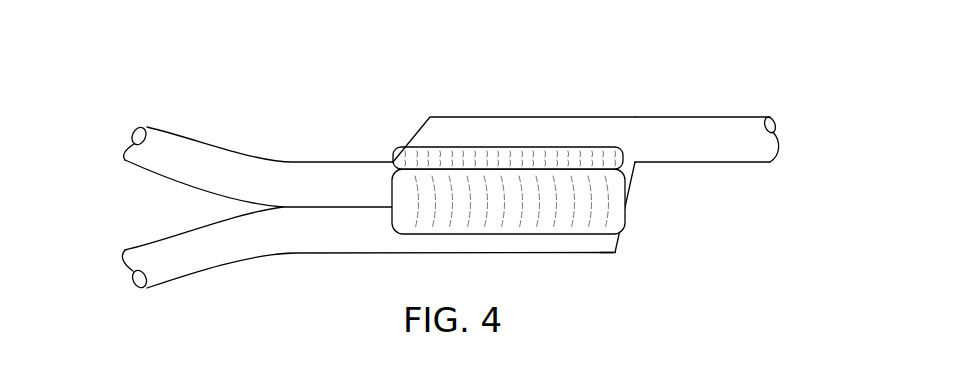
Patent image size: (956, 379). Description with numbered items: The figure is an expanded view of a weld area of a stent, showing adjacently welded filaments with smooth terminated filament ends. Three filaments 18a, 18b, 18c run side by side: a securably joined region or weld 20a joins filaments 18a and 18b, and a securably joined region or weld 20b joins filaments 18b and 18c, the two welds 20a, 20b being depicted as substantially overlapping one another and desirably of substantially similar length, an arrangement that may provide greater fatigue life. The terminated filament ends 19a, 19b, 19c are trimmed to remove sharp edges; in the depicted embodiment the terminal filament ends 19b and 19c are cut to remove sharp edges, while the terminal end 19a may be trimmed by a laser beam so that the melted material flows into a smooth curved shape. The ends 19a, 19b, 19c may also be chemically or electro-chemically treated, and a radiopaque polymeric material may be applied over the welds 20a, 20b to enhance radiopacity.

The filament 18a is at (757, 160).
The filament 18b is at (226, 166).
The filament 18c is at (224, 250).
The terminated filament end 19a is at (408, 148).
The terminated filament end 19b is at (632, 187).
The terminated filament end 19c is at (617, 244).
The securably joined region or weld 20a is at (583, 152).
The securably joined region or weld 20b is at (523, 228).